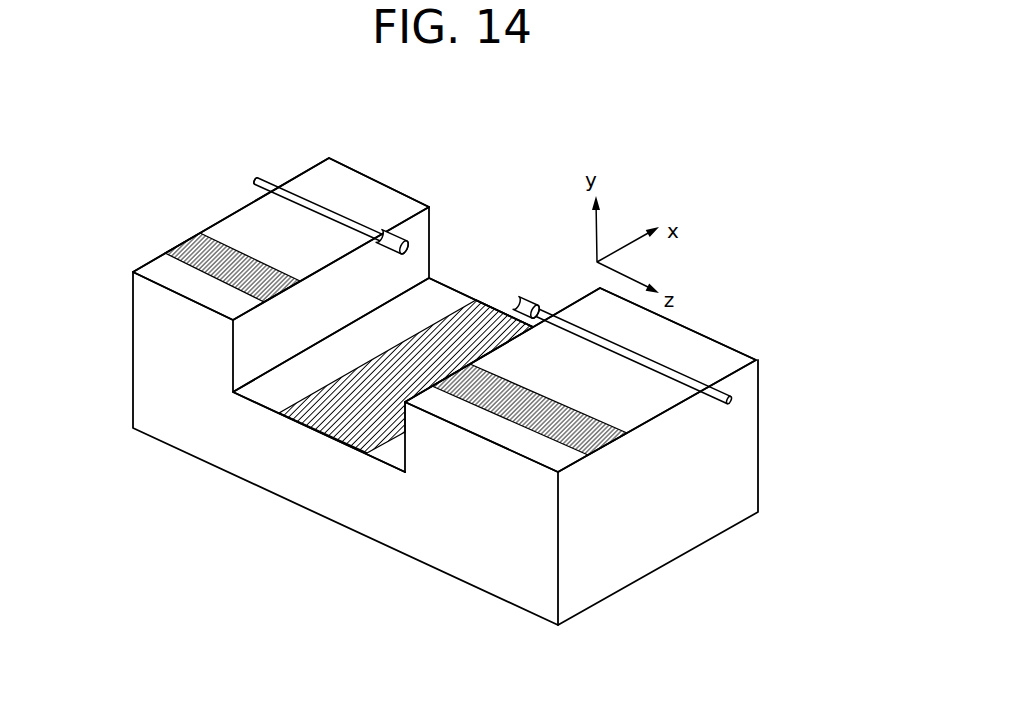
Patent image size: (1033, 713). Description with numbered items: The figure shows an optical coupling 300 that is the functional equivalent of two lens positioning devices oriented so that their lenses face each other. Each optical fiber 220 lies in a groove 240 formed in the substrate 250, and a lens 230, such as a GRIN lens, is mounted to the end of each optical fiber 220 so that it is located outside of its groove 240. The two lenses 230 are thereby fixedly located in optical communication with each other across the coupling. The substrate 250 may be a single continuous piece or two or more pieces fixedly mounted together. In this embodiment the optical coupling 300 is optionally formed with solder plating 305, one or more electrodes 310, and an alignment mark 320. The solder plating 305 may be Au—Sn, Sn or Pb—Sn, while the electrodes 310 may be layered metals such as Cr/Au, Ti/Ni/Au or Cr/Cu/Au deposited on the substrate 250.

The optical coupling 300 is at (694, 161).
The solder plating 305 is at (342, 417).
The electrode 310 is at (222, 262).
The alignment mark 320 is at (468, 298).
The substrate 250 is at (388, 195).
The groove 240 is at (332, 208).
The lens 230 is at (429, 238).
The optical fiber 220 is at (257, 178).